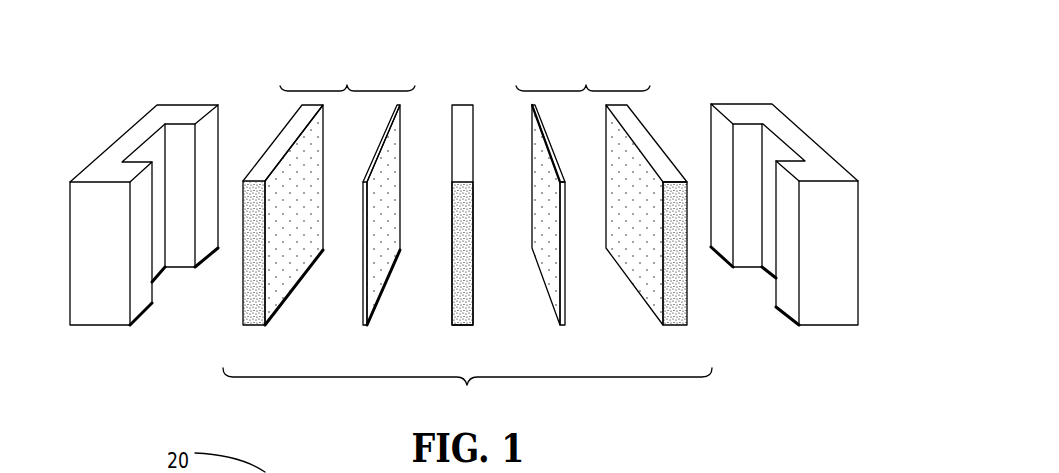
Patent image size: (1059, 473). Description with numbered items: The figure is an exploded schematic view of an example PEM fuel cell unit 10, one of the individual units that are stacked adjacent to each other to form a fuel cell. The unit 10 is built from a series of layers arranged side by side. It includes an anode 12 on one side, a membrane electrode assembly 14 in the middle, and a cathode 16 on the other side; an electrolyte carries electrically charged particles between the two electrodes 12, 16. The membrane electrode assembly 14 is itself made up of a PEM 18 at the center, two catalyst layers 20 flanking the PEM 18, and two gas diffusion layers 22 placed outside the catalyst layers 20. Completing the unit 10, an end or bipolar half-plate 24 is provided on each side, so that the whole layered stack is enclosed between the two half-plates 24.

The fuel cell unit 10 is at (150, 50).
The anode 12 is at (348, 80).
The membrane electrode assembly 14 is at (467, 385).
The cathode 16 is at (587, 80).
The PEM 18 is at (463, 325).
The catalyst layers 20 is at (363, 322).
The gas diffusion layers 22 is at (245, 305).
The end or bipolar half-plate 24 is at (92, 255).